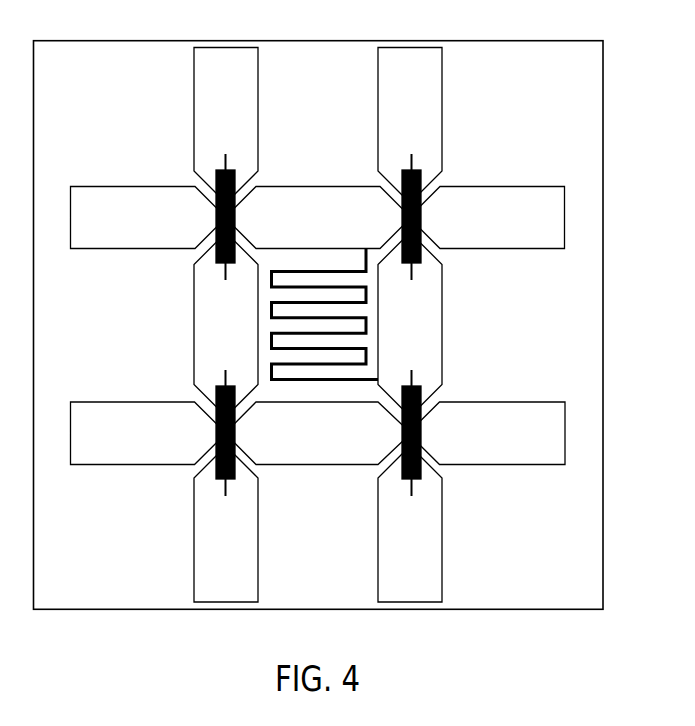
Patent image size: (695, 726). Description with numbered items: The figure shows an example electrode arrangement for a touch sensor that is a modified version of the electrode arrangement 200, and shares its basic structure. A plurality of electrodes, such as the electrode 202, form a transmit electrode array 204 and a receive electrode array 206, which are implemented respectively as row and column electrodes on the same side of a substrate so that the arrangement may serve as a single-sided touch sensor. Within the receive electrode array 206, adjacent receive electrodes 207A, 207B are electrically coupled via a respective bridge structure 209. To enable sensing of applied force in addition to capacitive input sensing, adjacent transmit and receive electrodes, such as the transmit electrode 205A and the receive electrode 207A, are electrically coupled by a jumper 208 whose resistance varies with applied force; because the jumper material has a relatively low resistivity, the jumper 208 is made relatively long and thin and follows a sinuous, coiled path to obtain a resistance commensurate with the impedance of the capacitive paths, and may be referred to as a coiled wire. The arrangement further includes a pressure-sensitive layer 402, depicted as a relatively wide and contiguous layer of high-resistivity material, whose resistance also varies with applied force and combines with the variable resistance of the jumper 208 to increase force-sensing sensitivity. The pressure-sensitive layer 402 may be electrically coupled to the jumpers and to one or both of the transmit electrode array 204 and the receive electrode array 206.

The electrode arrangement 200 is at (339, 325).
The electrode 202 is at (550, 410).
The transmit electrode array 204 is at (586, 199).
The transmit electrode 205A is at (303, 200).
The receive electrode array 206 is at (476, 78).
The receive electrode 207A is at (431, 318).
The receive electrode 207B is at (431, 512).
The jumper 208 is at (305, 364).
The bridge structure 209 is at (404, 477).
The pressure-sensitive layer 402 is at (593, 121).